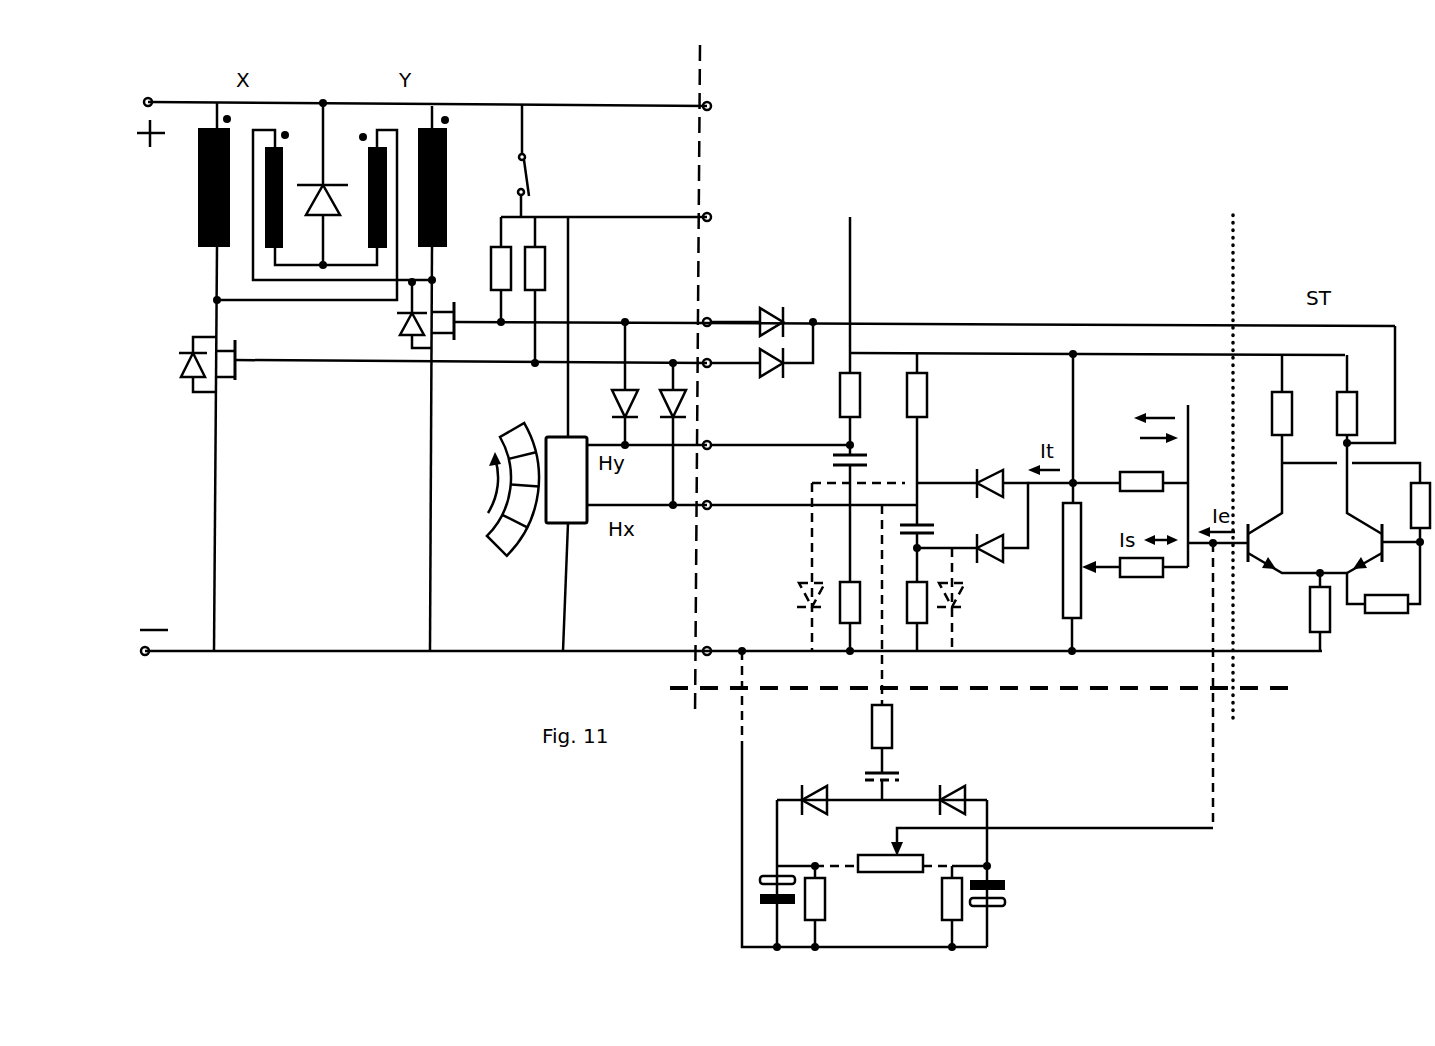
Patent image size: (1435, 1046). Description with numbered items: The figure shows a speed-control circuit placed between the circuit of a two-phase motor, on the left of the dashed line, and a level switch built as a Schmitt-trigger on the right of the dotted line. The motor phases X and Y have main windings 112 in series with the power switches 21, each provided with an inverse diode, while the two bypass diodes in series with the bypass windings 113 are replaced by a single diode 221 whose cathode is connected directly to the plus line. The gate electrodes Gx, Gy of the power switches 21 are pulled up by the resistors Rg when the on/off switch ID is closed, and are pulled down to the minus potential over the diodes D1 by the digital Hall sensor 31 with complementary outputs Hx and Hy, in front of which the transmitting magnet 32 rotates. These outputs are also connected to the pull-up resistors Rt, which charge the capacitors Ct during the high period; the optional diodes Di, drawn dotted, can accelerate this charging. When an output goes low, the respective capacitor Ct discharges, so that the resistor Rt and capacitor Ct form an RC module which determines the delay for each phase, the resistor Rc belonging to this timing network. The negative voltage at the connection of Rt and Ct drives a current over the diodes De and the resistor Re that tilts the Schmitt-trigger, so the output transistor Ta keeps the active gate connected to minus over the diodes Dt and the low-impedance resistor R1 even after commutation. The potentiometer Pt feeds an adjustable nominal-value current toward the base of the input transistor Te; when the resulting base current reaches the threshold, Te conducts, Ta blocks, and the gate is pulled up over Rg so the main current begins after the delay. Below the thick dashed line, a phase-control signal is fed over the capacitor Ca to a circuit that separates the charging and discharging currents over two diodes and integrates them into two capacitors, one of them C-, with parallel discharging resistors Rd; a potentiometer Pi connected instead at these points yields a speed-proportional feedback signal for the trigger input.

The main windings 112 is at (322, 187).
The bypass windings 113 is at (326, 197).
The bypass diode 221 is at (334, 182).
The power switches 21 is at (316, 335).
The digital Hall sensor 31 is at (566, 480).
The transmitting magnet 32 is at (514, 479).
The gate electrode Gx is at (473, 375).
The gate electrode Gy is at (924, 337).
The on/off switch ID is at (537, 161).
The pull-up resistors Rg is at (601, 290).
The diodes D1 is at (649, 413).
The diodes Dt is at (764, 342).
The resistor Rc is at (866, 395).
The capacitors Ct is at (874, 493).
The pull-up resistors Rt is at (883, 602).
The diodes Di is at (883, 567).
The diodes De is at (972, 516).
The resistor Re is at (1127, 467).
The potentiometer Pt is at (1125, 579).
The input transistor Te is at (1297, 464).
The output transistor Ta is at (1379, 464).
The low-impedance resistor R1 is at (1302, 610).
The capacitor Ca is at (895, 752).
The capacitor C- is at (1000, 893).
The potentiometer Pi is at (995, 850).
The discharging resistors Rd is at (867, 906).